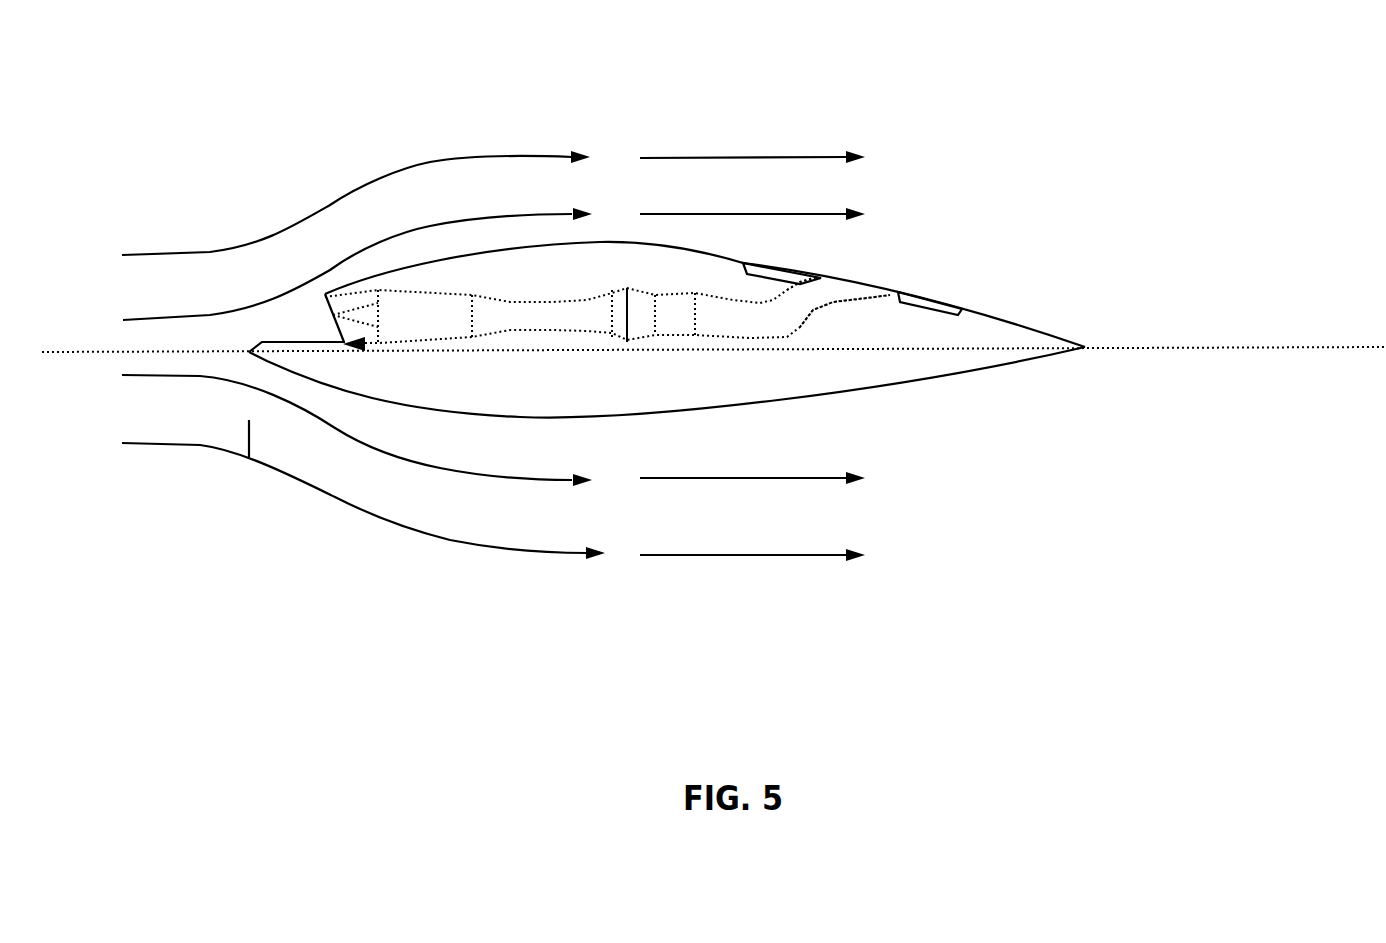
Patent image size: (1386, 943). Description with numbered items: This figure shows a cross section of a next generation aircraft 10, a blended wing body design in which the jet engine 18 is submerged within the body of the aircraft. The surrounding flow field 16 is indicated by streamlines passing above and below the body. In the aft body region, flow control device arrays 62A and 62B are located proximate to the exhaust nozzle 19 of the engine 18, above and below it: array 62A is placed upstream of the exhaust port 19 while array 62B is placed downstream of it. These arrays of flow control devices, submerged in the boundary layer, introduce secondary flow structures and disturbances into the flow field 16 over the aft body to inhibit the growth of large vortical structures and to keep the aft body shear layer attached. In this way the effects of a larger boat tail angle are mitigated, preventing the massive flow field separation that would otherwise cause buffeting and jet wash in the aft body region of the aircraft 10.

The next-generation aircraft 10 is at (336, 100).
The flow field 16 is at (493, 349).
The engine 18 is at (338, 330).
The exhaust nozzle 19 is at (874, 283).
The flow control device array 62A is at (781, 264).
The flow control device array 62B is at (933, 300).